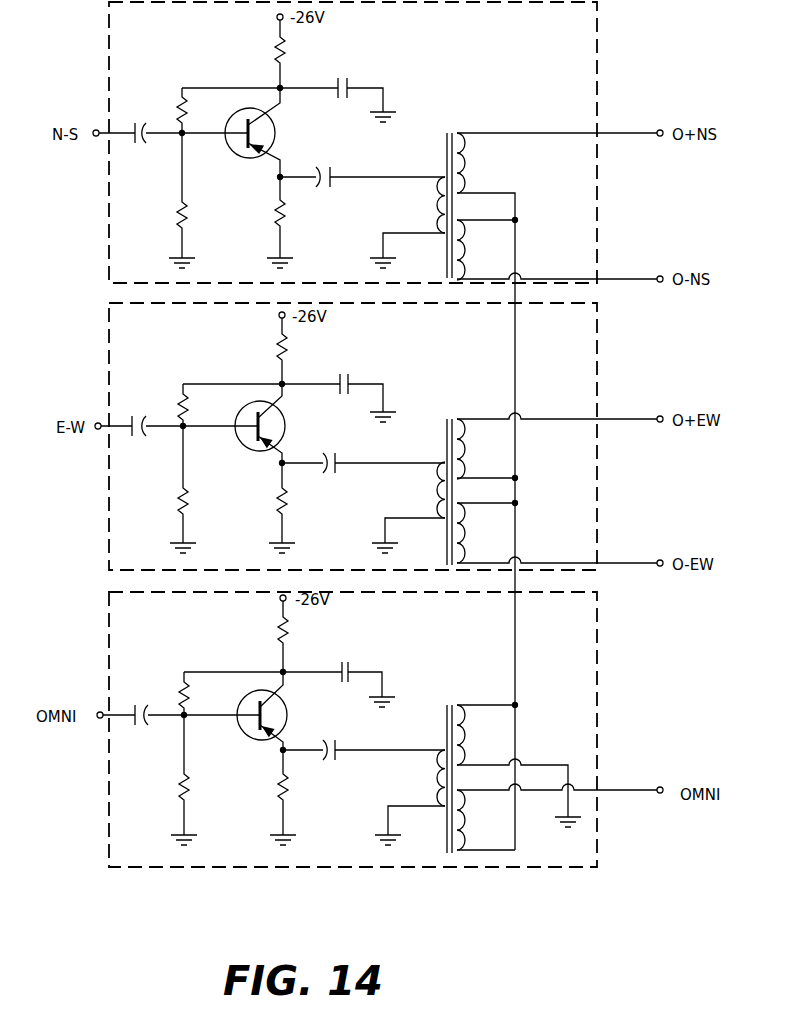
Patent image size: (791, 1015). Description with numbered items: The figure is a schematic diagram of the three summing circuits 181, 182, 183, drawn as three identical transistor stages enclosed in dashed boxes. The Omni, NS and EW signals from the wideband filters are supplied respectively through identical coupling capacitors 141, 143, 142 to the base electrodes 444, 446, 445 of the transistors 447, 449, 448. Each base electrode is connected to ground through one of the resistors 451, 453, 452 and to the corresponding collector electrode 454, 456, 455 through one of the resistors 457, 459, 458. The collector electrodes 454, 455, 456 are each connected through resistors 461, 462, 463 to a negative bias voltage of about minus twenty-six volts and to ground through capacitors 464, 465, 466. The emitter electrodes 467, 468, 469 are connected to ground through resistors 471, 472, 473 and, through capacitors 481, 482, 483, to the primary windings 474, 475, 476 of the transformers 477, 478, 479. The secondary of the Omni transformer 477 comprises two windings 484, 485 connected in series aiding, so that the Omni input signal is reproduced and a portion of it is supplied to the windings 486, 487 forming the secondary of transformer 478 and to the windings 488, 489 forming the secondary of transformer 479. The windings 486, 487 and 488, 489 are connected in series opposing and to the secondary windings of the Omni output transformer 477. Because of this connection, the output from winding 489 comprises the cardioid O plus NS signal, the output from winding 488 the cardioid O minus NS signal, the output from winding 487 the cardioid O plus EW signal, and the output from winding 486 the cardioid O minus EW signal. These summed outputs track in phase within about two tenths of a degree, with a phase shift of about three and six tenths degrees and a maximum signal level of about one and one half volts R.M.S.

The summing circuit 182 is at (108, 46).
The summing circuit 183 is at (108, 332).
The summing circuit 181 is at (108, 622).
The coupling capacitor 141 is at (151, 709).
The coupling capacitor 142 is at (145, 422).
The coupling capacitor 143 is at (145, 129).
The base electrode 444 is at (238, 734).
The base electrode 445 is at (238, 442).
The base electrode 446 is at (228, 145).
The transistor 447 is at (246, 702).
The transistor 448 is at (240, 414).
The transistor 449 is at (232, 118).
The resistor 451 is at (189, 788).
The resistor 452 is at (189, 493).
The resistor 453 is at (187, 208).
The collector electrode 454 is at (283, 702).
The collector electrode 455 is at (276, 412).
The collector electrode 456 is at (268, 122).
The resistor 457 is at (180, 680).
The resistor 458 is at (183, 393).
The resistor 459 is at (182, 95).
The resistor 461 is at (289, 628).
The resistor 462 is at (289, 348).
The resistor 463 is at (285, 53).
The capacitor 464 is at (349, 671).
The capacitor 465 is at (349, 381).
The capacitor 466 is at (347, 86).
The emitter electrode 467 is at (283, 727).
The emitter electrode 468 is at (276, 436).
The emitter electrode 469 is at (268, 148).
The resistor 471 is at (289, 788).
The resistor 472 is at (291, 493).
The resistor 473 is at (285, 213).
The primary winding 474 is at (429, 771).
The primary winding 475 is at (427, 493).
The primary winding 476 is at (428, 208).
The transformer 477 is at (445, 708).
The transformer 478 is at (447, 424).
The transformer 479 is at (446, 136).
The capacitor 481 is at (339, 751).
The capacitor 482 is at (335, 466).
The capacitor 483 is at (330, 176).
The secondary winding 484 is at (468, 814).
The secondary winding 485 is at (468, 730).
The secondary winding 486 is at (467, 522).
The secondary winding 487 is at (470, 437).
The secondary winding 488 is at (466, 252).
The secondary winding 489 is at (470, 170).